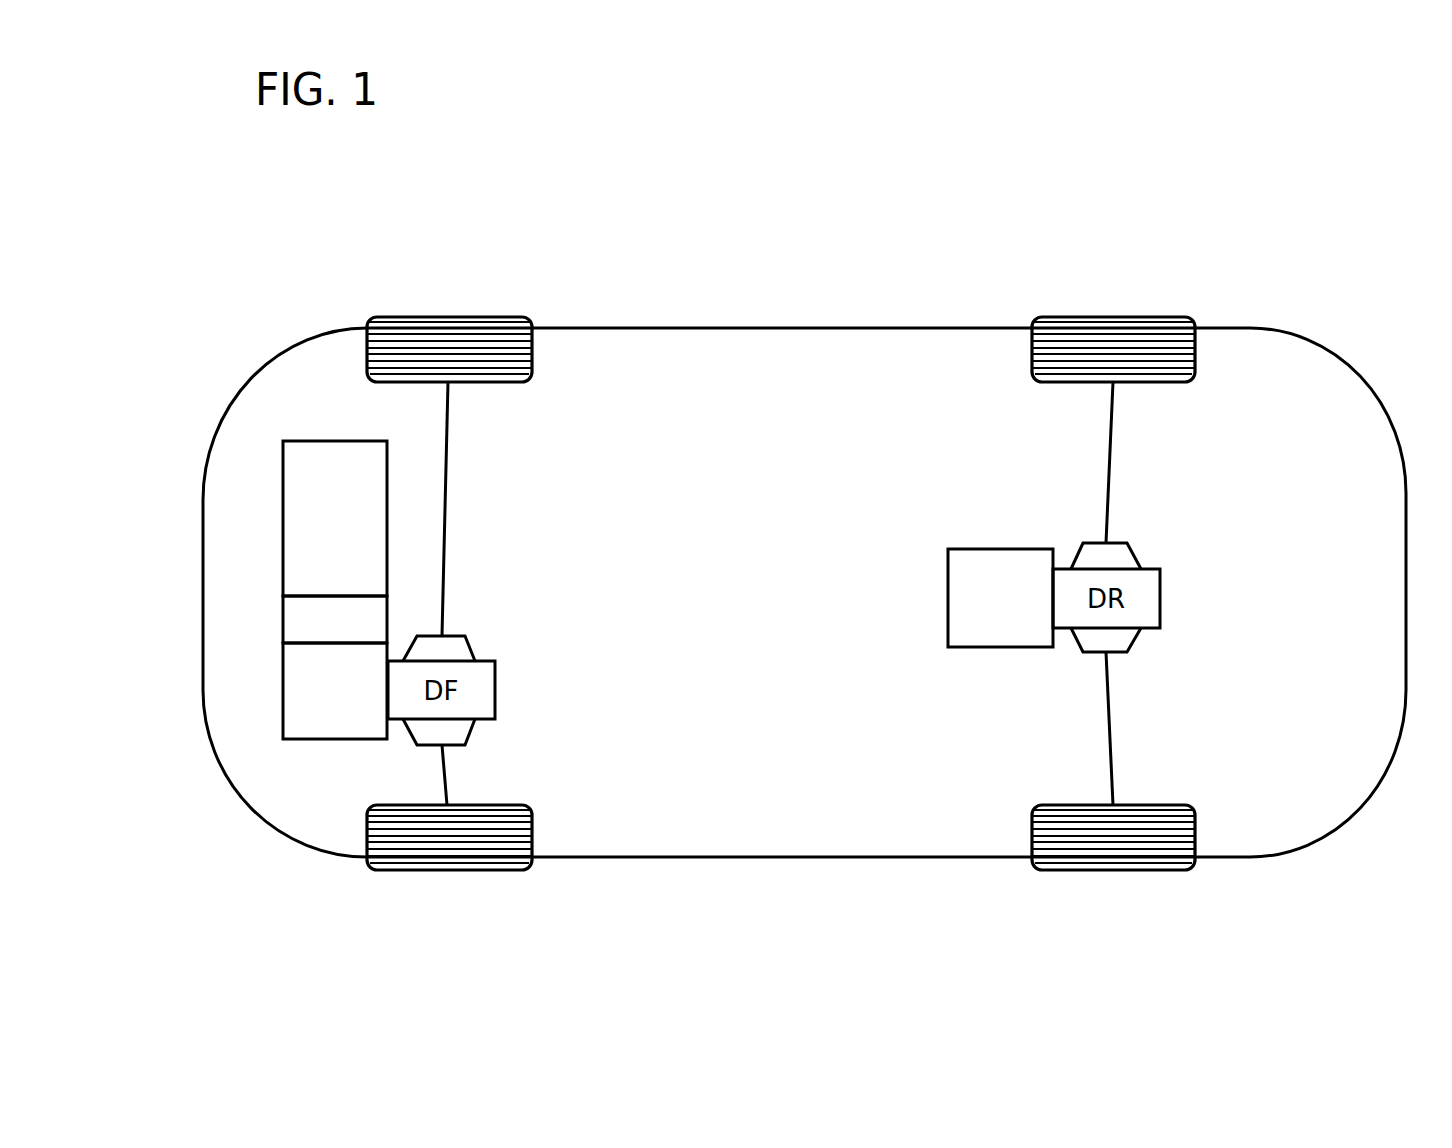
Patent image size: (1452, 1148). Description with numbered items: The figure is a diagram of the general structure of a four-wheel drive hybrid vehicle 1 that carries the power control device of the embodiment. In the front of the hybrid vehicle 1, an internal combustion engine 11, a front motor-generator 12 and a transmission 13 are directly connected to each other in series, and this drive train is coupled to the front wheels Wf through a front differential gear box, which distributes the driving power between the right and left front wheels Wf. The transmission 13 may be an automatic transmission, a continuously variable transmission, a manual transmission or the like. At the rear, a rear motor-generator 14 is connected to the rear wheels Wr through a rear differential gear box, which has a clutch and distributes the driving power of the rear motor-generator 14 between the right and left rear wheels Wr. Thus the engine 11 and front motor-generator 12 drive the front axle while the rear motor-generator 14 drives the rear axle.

The hybrid vehicle 1 is at (805, 328).
The internal combustion engine 11 is at (283, 523).
The front motor-generator 12 is at (283, 624).
The transmission 13 is at (283, 694).
The rear motor-generator 14 is at (948, 600).
The front wheels Wf is at (450, 316).
The rear wheels Wr is at (1113, 316).